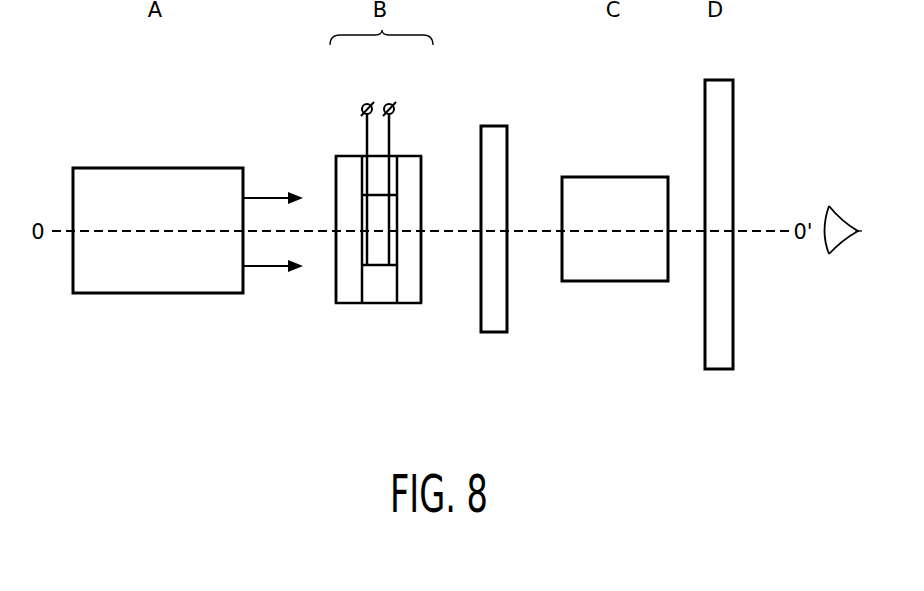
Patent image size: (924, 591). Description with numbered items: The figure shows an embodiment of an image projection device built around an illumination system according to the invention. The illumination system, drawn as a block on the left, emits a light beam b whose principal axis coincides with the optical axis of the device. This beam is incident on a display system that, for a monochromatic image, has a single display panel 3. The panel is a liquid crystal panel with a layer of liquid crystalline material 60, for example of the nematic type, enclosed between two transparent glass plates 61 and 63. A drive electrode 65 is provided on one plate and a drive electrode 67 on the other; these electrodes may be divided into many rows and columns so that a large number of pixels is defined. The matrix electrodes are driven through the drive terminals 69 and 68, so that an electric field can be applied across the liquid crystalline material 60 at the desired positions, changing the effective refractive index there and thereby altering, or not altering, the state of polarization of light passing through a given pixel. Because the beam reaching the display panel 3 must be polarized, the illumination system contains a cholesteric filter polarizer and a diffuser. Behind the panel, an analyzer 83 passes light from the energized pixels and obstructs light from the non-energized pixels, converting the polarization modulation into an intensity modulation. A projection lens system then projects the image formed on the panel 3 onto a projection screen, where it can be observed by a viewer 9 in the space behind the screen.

The display panel 3 is at (376, 226).
The liquid crystalline material 60 is at (381, 255).
The transparent plate 61 is at (350, 297).
The transparent plate 63 is at (408, 298).
The drive electrode 65 is at (362, 213).
The drive electrode 67 is at (397, 210).
The drive terminal 68 is at (394, 104).
The drive terminal 69 is at (363, 104).
The analyzer 83 is at (497, 323).
The viewer 9 is at (829, 284).
The light beam b is at (262, 268).